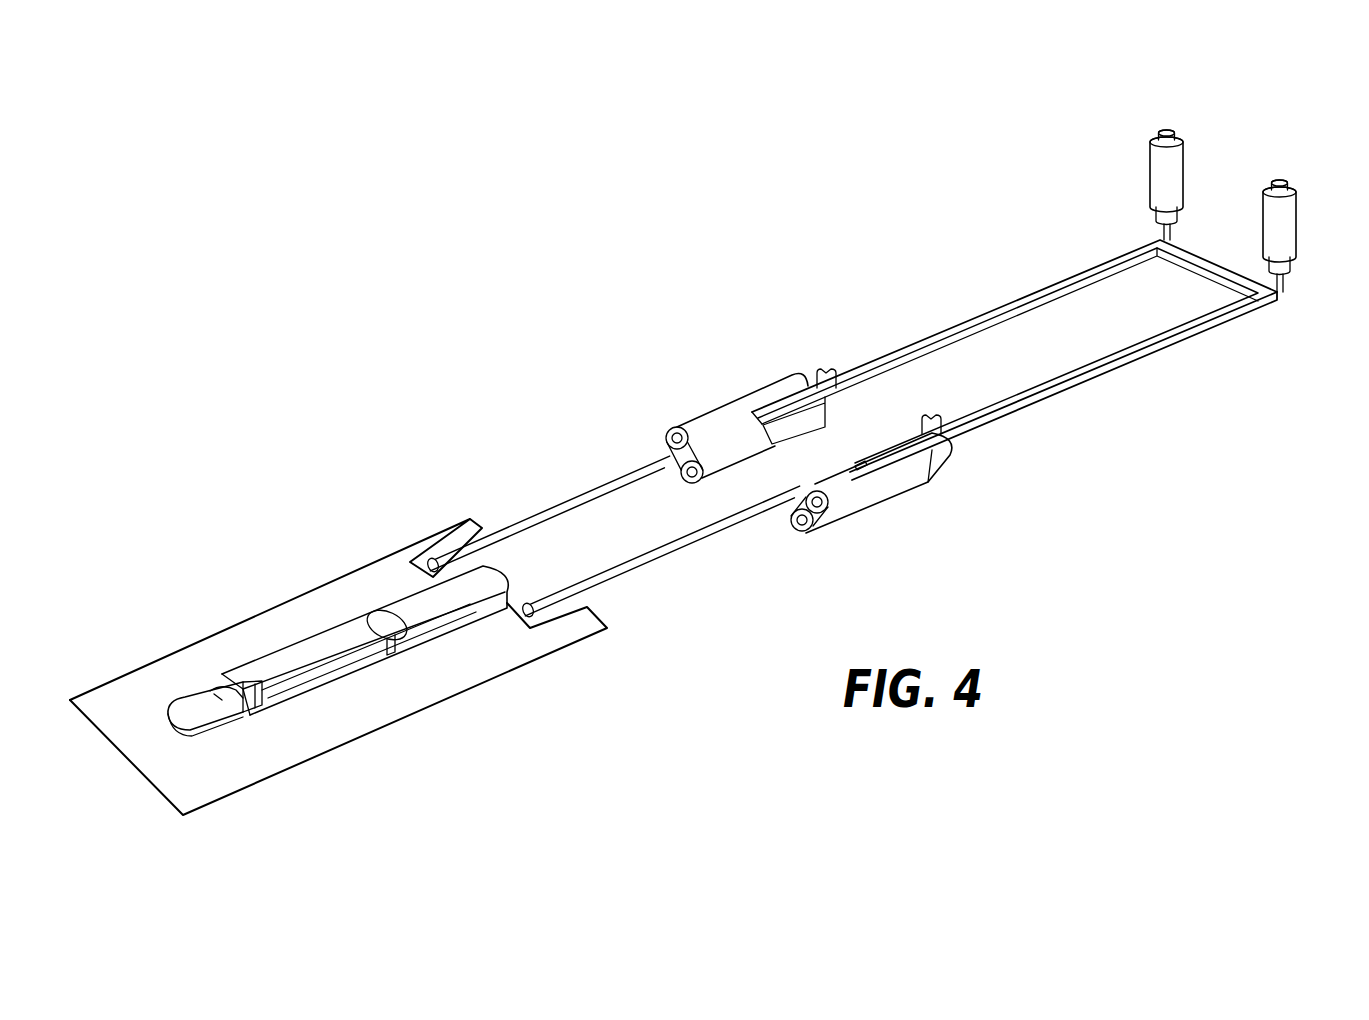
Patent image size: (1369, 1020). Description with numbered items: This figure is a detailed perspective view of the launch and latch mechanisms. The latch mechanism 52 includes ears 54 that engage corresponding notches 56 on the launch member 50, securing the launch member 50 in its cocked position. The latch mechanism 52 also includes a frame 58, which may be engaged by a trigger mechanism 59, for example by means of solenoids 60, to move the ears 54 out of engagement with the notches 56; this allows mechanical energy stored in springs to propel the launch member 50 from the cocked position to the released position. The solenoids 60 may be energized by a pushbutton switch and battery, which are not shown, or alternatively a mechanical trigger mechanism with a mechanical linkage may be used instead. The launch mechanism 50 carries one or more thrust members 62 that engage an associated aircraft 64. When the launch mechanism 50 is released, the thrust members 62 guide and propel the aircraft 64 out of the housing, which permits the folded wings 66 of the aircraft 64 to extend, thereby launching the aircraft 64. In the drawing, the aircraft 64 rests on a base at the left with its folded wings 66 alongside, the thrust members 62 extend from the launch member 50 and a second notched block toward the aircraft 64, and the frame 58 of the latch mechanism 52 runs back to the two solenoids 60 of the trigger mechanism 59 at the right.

The launch member 50 is at (722, 406).
The latch mechanism 52 is at (873, 316).
The ears 54 is at (757, 404).
The notches 56 is at (768, 441).
The frame 58 is at (1068, 279).
The trigger mechanism 59 is at (1250, 160).
The solenoids 60 is at (1184, 178).
The thrust members 62 is at (617, 569).
The aircraft 64 is at (392, 726).
The folded wings 66 is at (333, 626).